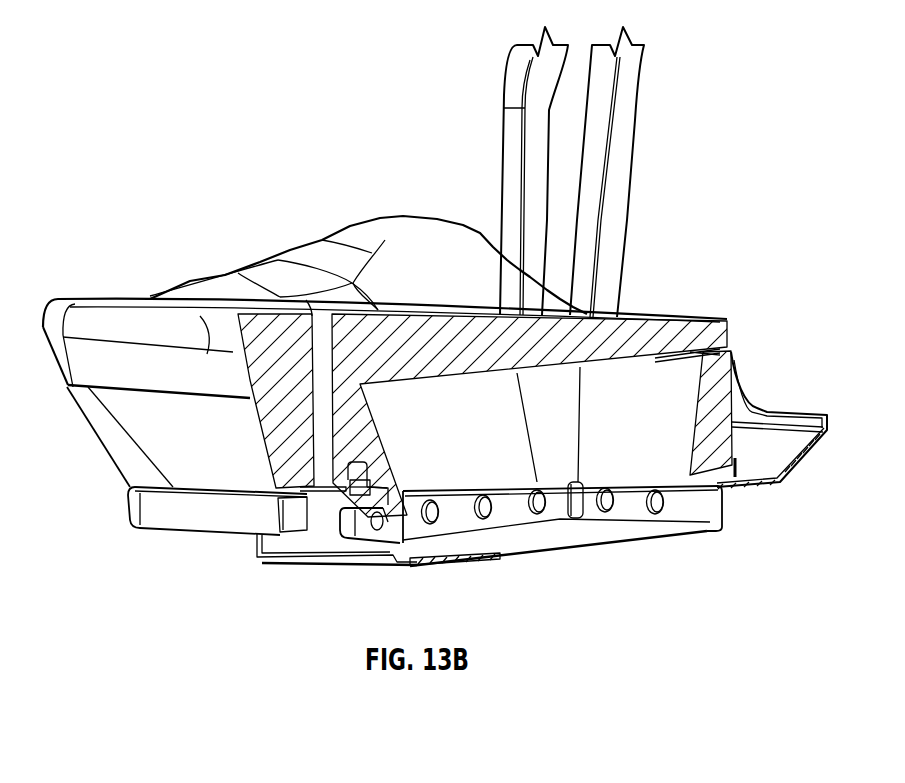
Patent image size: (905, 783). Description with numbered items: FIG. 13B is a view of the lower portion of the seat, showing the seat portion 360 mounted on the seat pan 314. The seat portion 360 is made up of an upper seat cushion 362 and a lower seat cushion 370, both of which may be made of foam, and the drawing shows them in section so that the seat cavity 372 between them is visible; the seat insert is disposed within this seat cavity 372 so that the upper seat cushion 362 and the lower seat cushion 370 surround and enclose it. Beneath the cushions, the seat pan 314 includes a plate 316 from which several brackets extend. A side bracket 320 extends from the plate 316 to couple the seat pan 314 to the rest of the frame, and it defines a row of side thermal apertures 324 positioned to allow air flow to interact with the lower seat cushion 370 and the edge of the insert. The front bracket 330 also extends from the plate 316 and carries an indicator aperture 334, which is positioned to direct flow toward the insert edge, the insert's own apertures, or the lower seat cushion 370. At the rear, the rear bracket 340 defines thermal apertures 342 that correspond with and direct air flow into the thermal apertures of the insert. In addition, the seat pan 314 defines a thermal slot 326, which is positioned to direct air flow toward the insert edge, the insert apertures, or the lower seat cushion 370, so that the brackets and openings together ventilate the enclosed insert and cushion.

The seat pan 314 is at (698, 565).
The plate 316 is at (560, 547).
The side brackets 320 is at (458, 514).
The side thermal apertures 324 is at (428, 530).
The thermal slots 326 is at (575, 494).
The front bracket 330 is at (258, 538).
The indicator aperture 334 is at (337, 522).
The rear bracket 340 is at (722, 497).
The thermal apertures 342 is at (708, 531).
The seat portion 360 is at (170, 162).
The upper seat cushion 362 is at (107, 317).
The lower seat cushion 370 is at (113, 447).
The seat cavity 372 is at (640, 385).